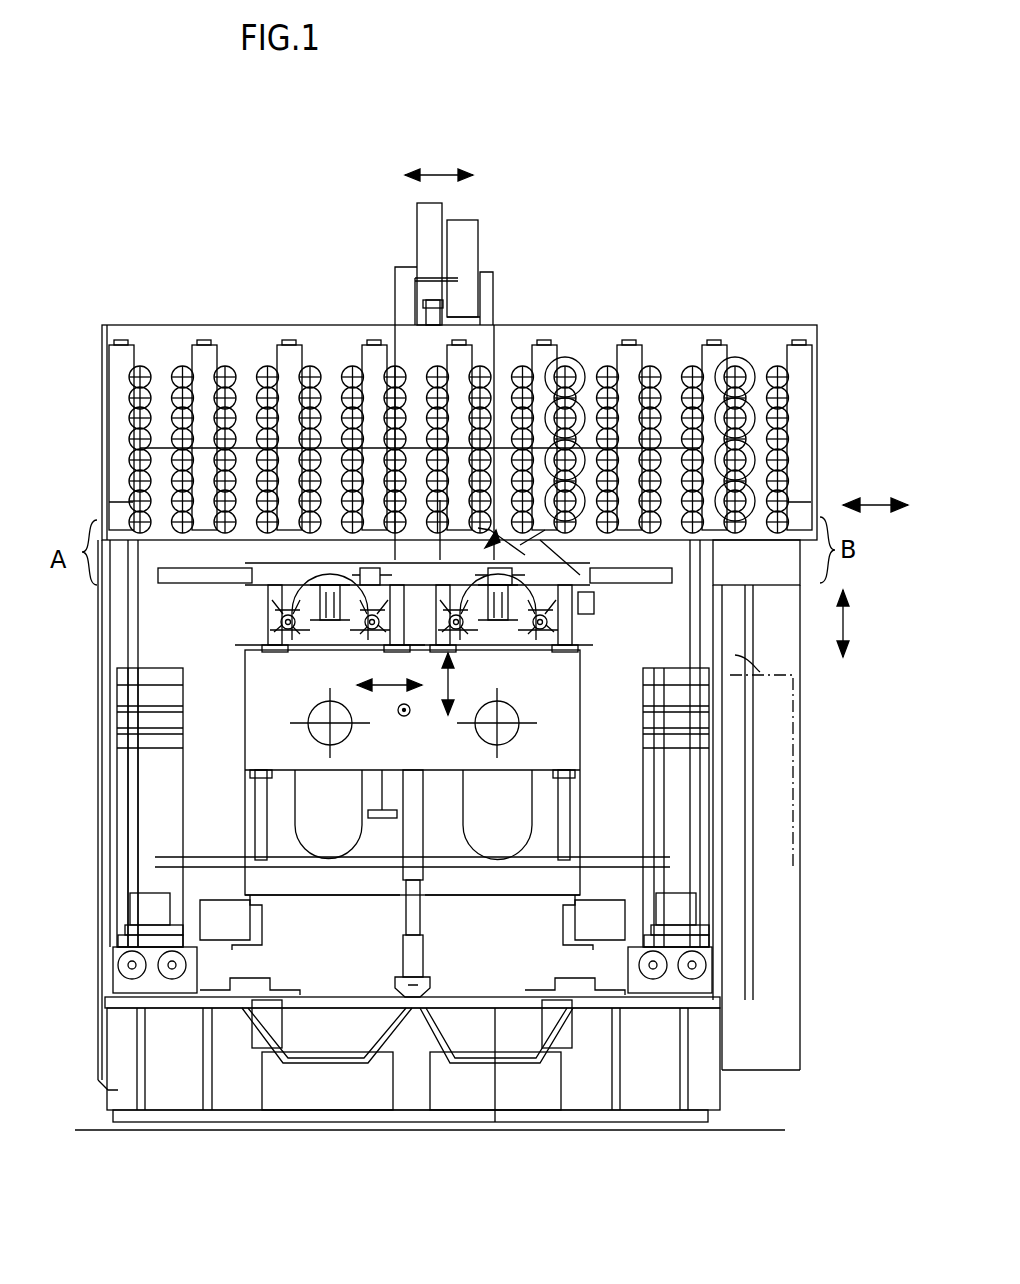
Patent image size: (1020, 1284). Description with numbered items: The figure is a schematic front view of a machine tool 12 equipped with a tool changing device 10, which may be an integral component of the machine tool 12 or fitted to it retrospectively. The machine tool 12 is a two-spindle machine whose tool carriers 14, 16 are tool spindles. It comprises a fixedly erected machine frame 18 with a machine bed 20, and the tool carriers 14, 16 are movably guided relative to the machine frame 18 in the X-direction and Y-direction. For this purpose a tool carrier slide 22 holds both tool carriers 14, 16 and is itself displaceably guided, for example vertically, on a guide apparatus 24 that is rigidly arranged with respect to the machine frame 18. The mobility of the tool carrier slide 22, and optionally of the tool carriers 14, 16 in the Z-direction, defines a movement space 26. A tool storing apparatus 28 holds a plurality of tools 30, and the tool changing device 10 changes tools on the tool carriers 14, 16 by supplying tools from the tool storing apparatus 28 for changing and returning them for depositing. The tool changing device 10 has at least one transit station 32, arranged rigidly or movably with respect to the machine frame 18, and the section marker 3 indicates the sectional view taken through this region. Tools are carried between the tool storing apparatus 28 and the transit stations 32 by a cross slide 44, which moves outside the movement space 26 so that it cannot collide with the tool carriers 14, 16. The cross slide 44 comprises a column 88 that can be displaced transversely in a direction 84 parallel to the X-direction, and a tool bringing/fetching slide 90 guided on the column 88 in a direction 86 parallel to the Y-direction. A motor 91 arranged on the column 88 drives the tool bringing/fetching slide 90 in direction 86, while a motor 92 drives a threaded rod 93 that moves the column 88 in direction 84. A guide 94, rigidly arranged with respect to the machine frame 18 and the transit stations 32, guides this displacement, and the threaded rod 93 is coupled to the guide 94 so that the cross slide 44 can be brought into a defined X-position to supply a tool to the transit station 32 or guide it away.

The section line III-III 3 is at (410, 642).
The tool changing device 10 is at (176, 617).
The machine tool 12 is at (97, 843).
The tool carrier 14 is at (312, 728).
The tool carrier 16 is at (507, 710).
The machine frame 18 is at (98, 780).
The machine bed 20 is at (118, 1087).
The tool carrier slide 22 is at (566, 733).
The guide apparatus 24 is at (572, 796).
The movement space 26 is at (437, 818).
The tool storing apparatus 28 is at (95, 345).
The tools 30 is at (313, 358).
The transit station 32 is at (256, 566).
The cross slide 44 is at (585, 578).
The direction 84 is at (872, 504).
The direction 86 is at (848, 622).
The column 88 is at (490, 284).
The tool bringing/fetching slide 90 is at (377, 548).
The motor 91 is at (428, 214).
The motor 92 is at (470, 232).
The threaded rod 93 is at (428, 314).
The guide 94 is at (548, 568).